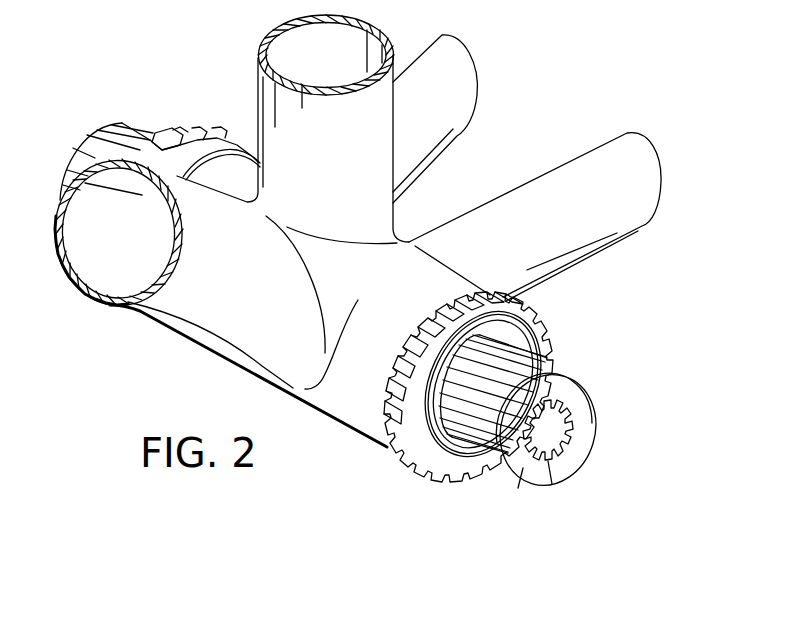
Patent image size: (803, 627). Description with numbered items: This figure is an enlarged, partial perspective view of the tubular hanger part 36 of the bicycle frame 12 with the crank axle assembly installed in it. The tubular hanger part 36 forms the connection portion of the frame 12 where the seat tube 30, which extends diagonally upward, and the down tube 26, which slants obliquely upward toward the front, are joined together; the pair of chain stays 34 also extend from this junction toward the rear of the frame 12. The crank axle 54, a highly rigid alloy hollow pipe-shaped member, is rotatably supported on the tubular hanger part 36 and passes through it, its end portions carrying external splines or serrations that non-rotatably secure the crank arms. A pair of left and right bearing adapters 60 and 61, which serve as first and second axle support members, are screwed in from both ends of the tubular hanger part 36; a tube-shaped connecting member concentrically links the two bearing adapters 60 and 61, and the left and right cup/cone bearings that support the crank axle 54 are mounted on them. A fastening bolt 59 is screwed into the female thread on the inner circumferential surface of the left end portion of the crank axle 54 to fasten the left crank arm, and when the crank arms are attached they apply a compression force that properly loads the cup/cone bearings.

The bicycle frame 12 is at (250, 103).
The down tube 26 is at (163, 318).
The seat tube 30 is at (266, 88).
The chain stays 34 is at (455, 136).
The tubular hanger part 36 is at (358, 396).
The crank axle 54 is at (497, 472).
The fastening bolt 59 is at (580, 397).
The bearing adapter 60 is at (552, 320).
The bearing adapter 61 is at (172, 120).